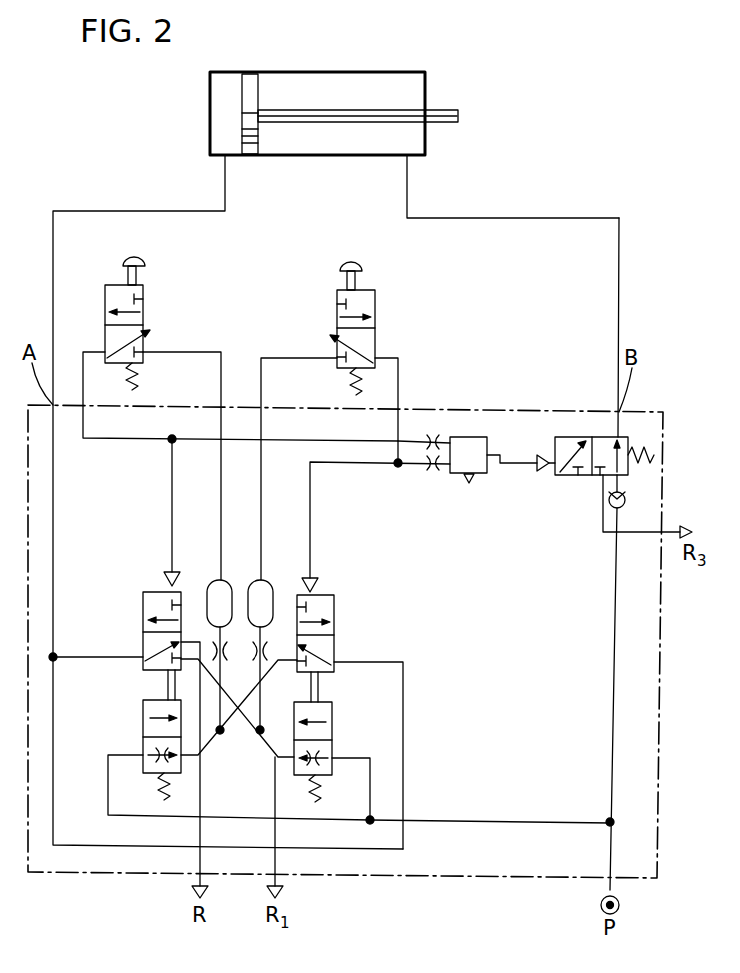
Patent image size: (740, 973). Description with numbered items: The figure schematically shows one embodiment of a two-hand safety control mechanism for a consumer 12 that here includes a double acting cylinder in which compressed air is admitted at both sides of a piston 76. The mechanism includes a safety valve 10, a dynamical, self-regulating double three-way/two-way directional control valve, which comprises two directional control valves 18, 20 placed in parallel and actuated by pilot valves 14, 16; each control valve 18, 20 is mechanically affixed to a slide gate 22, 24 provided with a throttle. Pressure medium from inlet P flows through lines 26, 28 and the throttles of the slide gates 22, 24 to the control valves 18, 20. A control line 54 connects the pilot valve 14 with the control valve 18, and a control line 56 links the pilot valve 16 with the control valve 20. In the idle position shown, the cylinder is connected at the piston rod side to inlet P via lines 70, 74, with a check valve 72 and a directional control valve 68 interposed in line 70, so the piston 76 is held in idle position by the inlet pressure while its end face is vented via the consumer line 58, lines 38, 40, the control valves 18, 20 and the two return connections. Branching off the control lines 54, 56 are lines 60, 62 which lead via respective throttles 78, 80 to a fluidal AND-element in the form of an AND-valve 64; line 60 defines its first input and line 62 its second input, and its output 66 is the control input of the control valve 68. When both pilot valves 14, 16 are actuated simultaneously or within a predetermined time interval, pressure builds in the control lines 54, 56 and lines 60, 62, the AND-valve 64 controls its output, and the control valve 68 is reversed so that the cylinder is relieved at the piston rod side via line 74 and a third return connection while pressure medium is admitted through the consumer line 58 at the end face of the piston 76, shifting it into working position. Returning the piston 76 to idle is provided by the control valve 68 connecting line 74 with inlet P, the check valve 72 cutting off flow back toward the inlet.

The safety valve 10 is at (136, 578).
The consumer 12 is at (336, 70).
The pilot valve 14 is at (107, 297).
The pilot valve 16 is at (366, 296).
The directional control valve 18 is at (147, 604).
The directional control valve 20 is at (323, 608).
The slide gate 22 is at (150, 728).
The slide gate 24 is at (327, 731).
The line 26 is at (148, 817).
The line 28 is at (367, 775).
The line 38 is at (90, 659).
The line 40 is at (404, 724).
The control line 54 is at (132, 440).
The control line 56 is at (405, 366).
The consumer line 58 is at (112, 211).
The line 60 is at (403, 437).
The line 62 is at (408, 466).
The AND-valve 64 is at (483, 474).
The output 66 is at (517, 466).
The directional control valve 68 is at (558, 477).
The line 70 is at (613, 630).
The check valve 72 is at (626, 500).
The line 74 is at (620, 255).
The piston 76 is at (253, 80).
The throttle 78 is at (434, 436).
The throttle 80 is at (431, 472).